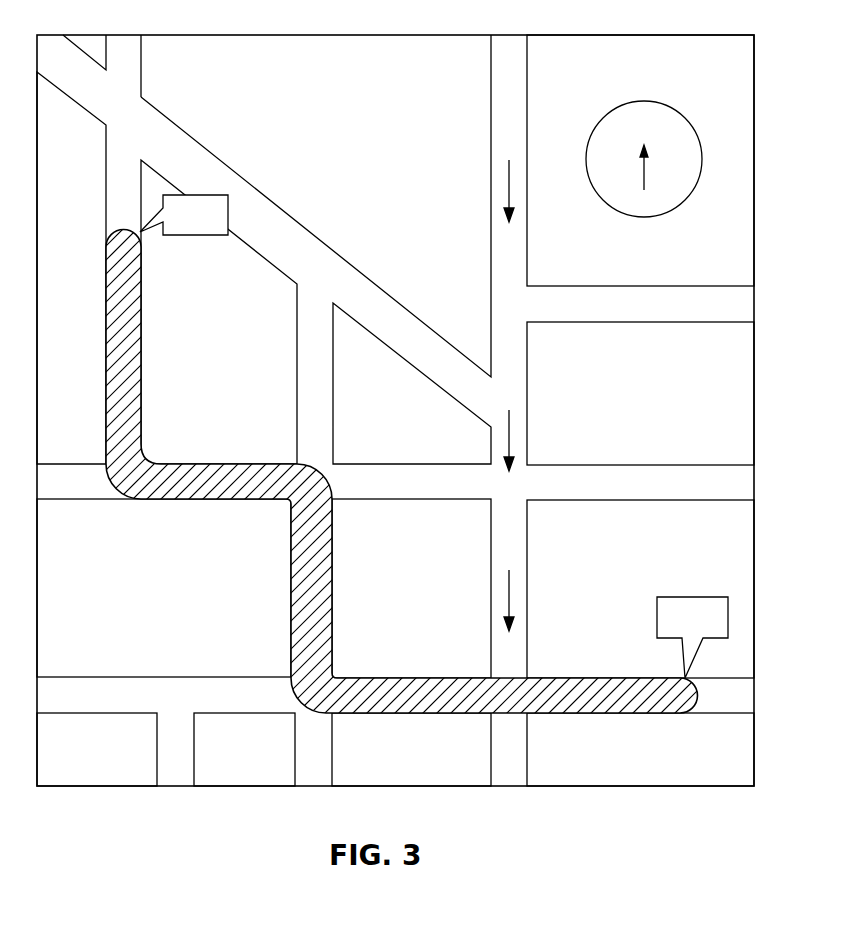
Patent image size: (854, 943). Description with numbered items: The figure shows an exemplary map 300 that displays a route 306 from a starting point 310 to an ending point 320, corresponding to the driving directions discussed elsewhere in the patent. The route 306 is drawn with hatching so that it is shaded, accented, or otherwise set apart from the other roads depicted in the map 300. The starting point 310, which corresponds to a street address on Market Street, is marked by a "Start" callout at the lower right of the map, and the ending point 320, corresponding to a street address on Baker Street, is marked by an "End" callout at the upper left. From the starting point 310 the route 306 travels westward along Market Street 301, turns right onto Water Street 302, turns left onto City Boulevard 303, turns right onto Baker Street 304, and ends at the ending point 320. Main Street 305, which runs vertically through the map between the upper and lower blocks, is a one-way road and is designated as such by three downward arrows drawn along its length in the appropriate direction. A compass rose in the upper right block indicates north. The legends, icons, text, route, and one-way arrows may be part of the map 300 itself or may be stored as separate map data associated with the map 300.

The map 300 is at (755, 97).
The Market Street 301 is at (540, 677).
The Water Street 302 is at (332, 580).
The City Boulevard 303 is at (178, 463).
The Baker Street 304 is at (140, 381).
The Main Street 305 is at (527, 431).
The route 306 is at (370, 692).
The starting point 310 is at (703, 597).
The ending point 320 is at (178, 235).